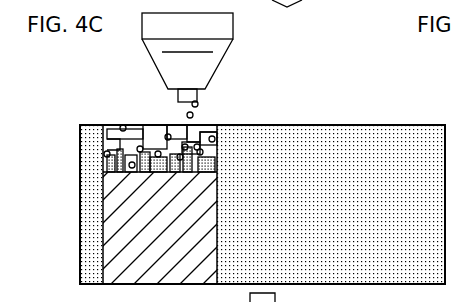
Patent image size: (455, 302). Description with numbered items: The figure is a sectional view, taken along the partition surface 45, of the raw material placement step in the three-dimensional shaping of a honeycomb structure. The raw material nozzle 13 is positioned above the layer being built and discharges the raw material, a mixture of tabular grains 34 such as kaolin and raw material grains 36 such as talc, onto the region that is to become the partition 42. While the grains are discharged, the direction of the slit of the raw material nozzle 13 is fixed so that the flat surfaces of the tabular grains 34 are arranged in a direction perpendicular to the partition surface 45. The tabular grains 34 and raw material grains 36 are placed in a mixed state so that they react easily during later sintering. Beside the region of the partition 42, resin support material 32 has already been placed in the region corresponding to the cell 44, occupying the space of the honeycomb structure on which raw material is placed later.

The raw material nozzle 13 is at (220, 64).
The tabular grains 34 is at (201, 124).
The raw material grains 36 is at (186, 113).
The partition surface 45 is at (218, 207).
The partition 42 is at (173, 257).
The support material 32 is at (405, 163).
The cell 44 is at (407, 97).